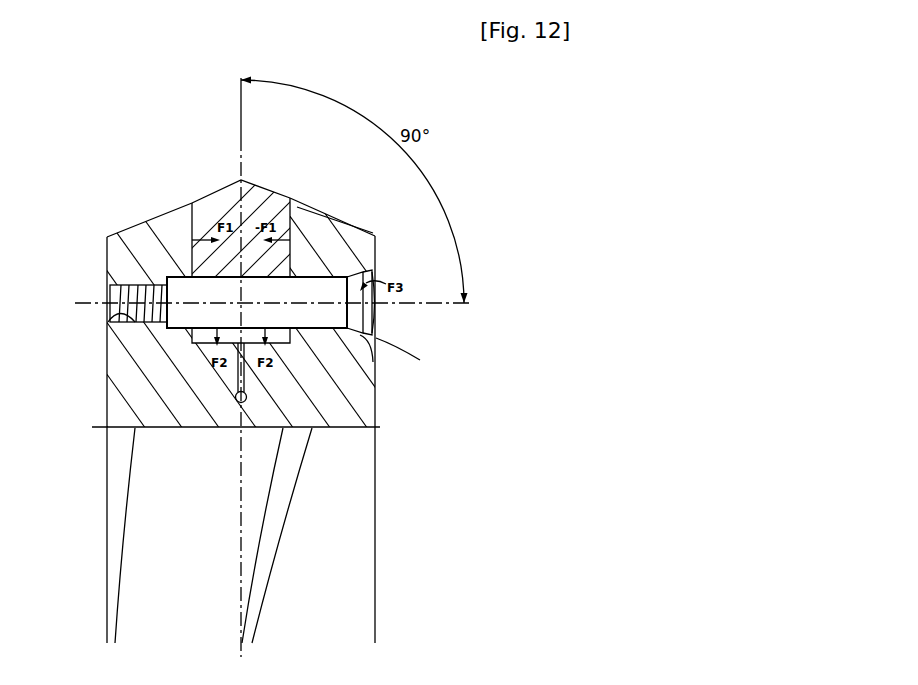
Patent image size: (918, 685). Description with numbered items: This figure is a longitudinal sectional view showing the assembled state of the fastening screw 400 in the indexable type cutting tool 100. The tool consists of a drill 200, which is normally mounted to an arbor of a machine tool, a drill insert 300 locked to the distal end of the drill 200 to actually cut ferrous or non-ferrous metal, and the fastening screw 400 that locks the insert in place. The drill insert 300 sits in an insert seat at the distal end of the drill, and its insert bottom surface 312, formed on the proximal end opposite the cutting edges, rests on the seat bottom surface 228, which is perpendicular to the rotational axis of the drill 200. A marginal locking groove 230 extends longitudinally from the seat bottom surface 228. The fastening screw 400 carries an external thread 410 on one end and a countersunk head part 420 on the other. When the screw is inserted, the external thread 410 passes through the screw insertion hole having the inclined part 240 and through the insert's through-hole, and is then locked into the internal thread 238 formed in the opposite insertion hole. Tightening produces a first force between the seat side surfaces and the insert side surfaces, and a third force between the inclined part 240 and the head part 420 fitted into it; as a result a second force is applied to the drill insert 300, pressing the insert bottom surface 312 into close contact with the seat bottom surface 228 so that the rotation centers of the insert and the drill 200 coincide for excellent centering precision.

The indexable type cutting tool 100 is at (154, 178).
The drill 200 is at (375, 525).
The seat bottom surface 228 is at (325, 363).
The marginal locking groove 230 is at (237, 382).
The internal thread 238 is at (112, 320).
The inclined part 240 is at (380, 340).
The drill insert 300 is at (223, 178).
The insert bottom surface 312 is at (190, 348).
The fastening screw 400 is at (385, 318).
The external thread 410 is at (112, 295).
The head part 420 is at (368, 338).